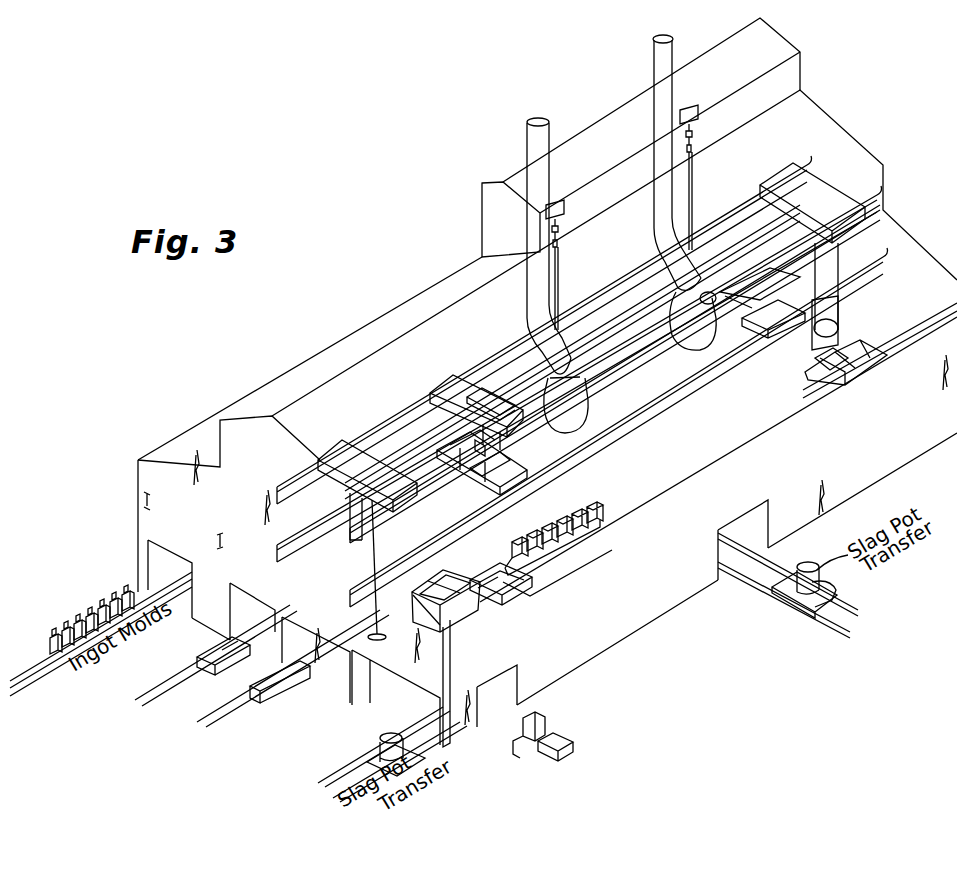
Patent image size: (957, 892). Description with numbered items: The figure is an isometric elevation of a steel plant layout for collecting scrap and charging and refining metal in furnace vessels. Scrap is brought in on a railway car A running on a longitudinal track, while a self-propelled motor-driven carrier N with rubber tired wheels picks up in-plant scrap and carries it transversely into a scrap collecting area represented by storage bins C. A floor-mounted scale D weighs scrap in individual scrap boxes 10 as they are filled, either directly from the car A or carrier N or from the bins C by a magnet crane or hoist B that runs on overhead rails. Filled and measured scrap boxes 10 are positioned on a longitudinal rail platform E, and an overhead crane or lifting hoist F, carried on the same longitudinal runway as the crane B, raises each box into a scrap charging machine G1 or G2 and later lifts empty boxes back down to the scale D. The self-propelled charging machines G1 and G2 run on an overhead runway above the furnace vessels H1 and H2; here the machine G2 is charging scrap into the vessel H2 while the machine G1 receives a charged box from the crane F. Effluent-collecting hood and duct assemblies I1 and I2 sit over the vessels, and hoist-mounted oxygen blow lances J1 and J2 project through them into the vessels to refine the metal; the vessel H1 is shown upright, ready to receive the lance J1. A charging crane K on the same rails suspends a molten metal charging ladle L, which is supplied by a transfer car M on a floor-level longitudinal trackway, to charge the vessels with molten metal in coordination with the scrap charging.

The effluent-collecting and discharging hood and duct assembly I1 is at (525, 128).
The effluent-collecting and discharging hood and duct assembly I2 is at (653, 47).
The oxygen blow lance J1 is at (560, 262).
The oxygen blow lance J2 is at (694, 180).
The charging crane K is at (782, 170).
The molten metal charging ladle L is at (815, 352).
The transfer car M is at (848, 372).
The overhead crane or lifting hoist F is at (435, 386).
The scrap charging machine G1 is at (480, 486).
The scrap charging machine G2 is at (770, 310).
The furnace vessel H1 is at (586, 398).
The furnace vessel H2 is at (690, 348).
The magnet crane or hoist B is at (340, 445).
The storage bins C is at (478, 618).
The floor-mounted scale D is at (496, 587).
The longitudinal rail platform E is at (557, 551).
The scrap box 10 is at (490, 568).
The railway car A is at (270, 698).
The self-propelled motor-driven carrier N is at (525, 745).